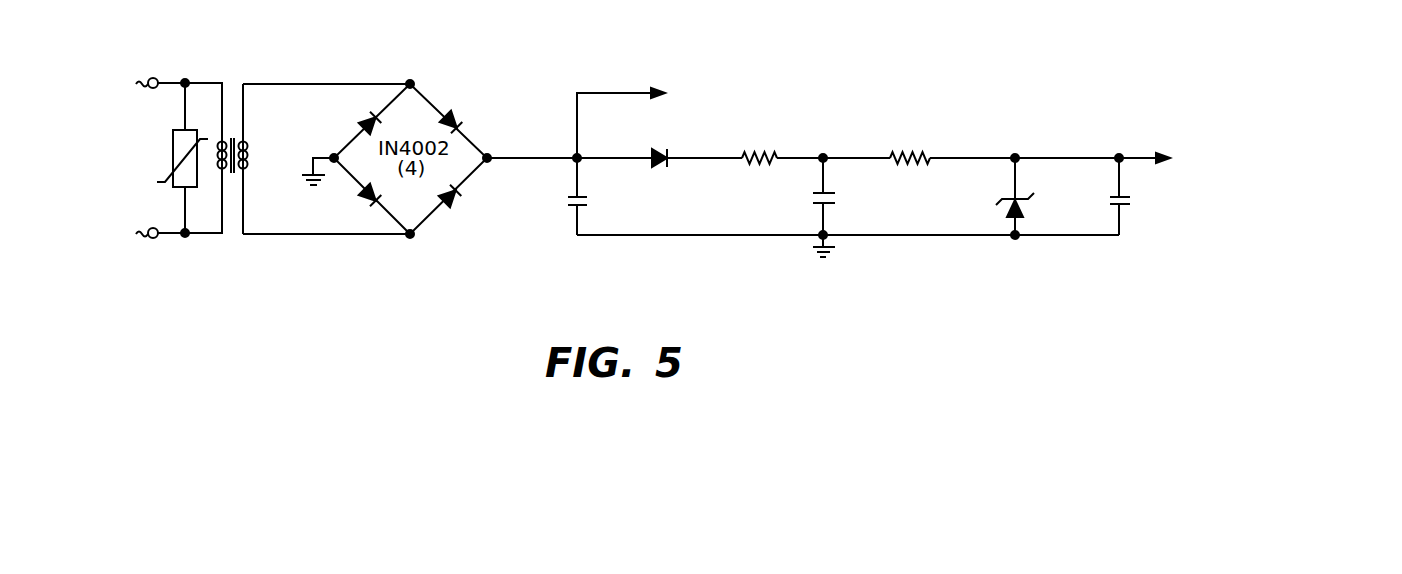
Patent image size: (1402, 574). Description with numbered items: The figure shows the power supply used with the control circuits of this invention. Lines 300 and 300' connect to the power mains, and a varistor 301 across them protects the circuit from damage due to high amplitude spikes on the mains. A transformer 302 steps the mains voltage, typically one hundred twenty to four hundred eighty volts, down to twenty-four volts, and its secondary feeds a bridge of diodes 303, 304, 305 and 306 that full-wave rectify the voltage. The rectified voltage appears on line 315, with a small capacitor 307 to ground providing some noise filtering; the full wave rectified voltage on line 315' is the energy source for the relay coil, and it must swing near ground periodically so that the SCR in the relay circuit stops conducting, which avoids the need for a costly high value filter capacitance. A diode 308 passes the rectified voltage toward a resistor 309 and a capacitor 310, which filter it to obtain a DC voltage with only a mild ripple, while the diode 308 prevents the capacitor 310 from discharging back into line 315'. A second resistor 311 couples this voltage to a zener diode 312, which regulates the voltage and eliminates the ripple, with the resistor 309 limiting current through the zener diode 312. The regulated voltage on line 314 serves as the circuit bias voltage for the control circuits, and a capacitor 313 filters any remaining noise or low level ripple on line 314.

The line 300 is at (122, 83).
The line 300' is at (118, 233).
The varistor 301 is at (178, 189).
The transformer 302 is at (243, 132).
The diode 303 is at (362, 124).
The diode 304 is at (457, 116).
The diode 305 is at (458, 200).
The diode 306 is at (360, 200).
The filter capacitor 307 is at (586, 207).
The diode 308 is at (657, 150).
The resistor 309 is at (761, 150).
The capacitor 310 is at (828, 195).
The resistor 311 is at (893, 150).
The zener diode 312 is at (1023, 212).
The capacitor 313 is at (1126, 207).
The line 314 is at (1140, 155).
The line 315 is at (569, 147).
The line 315' is at (749, 112).